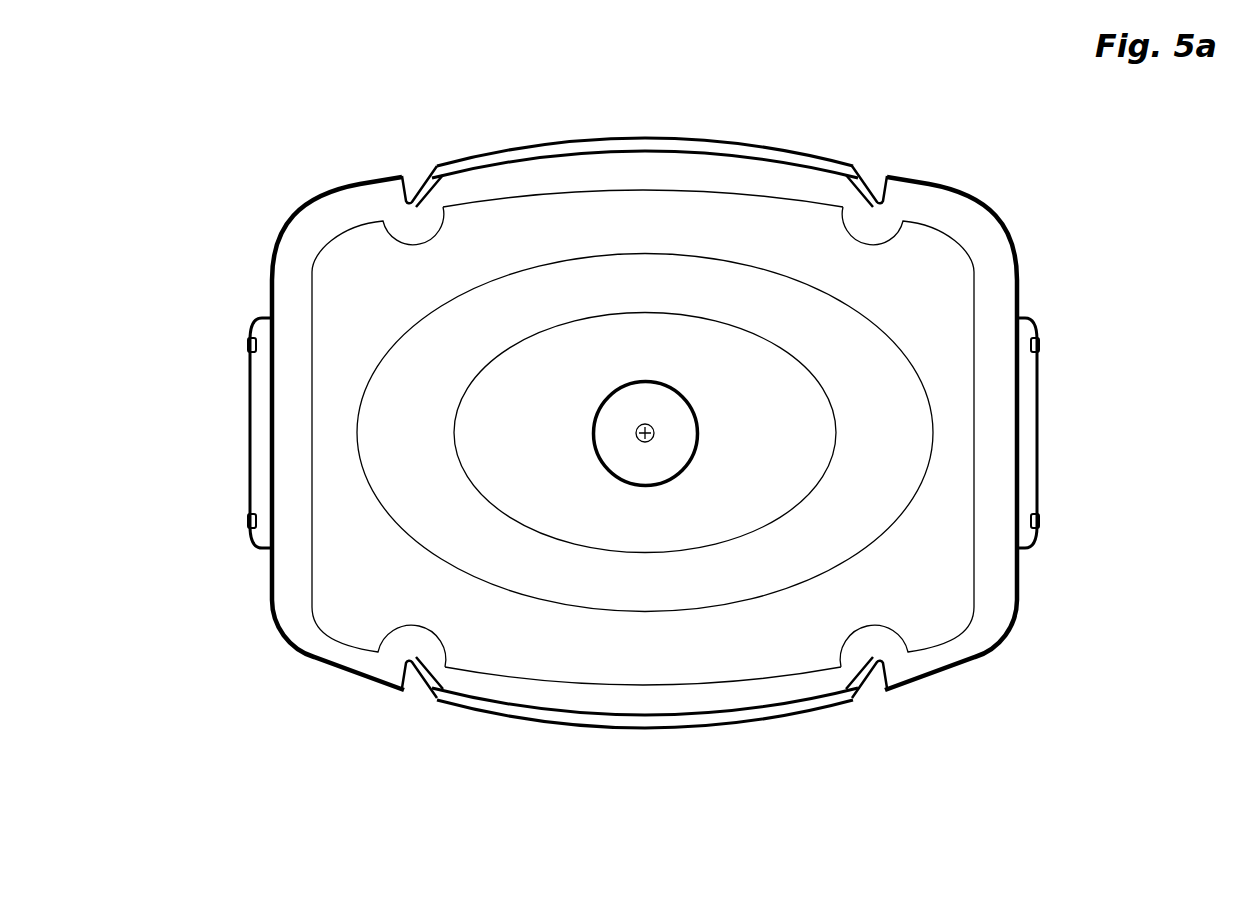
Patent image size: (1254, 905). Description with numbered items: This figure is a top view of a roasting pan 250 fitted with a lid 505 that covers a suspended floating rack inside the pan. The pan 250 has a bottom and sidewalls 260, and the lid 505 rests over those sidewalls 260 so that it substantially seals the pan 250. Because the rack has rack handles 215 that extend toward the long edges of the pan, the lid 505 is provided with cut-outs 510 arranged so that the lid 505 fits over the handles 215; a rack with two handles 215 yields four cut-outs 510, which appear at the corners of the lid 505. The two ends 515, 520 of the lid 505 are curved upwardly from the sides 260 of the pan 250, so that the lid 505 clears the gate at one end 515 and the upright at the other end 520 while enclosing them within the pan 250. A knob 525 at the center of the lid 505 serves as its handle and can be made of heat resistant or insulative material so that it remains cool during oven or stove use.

The roasting pan 250 is at (563, 104).
The rack handles 215 is at (673, 138).
The lid 505 is at (298, 243).
The cut-outs 510 is at (405, 185).
The end of the lid 515 is at (992, 328).
The end of the lid 520 is at (282, 307).
The knob 525 is at (630, 383).
The sidewalls 260 is at (263, 572).